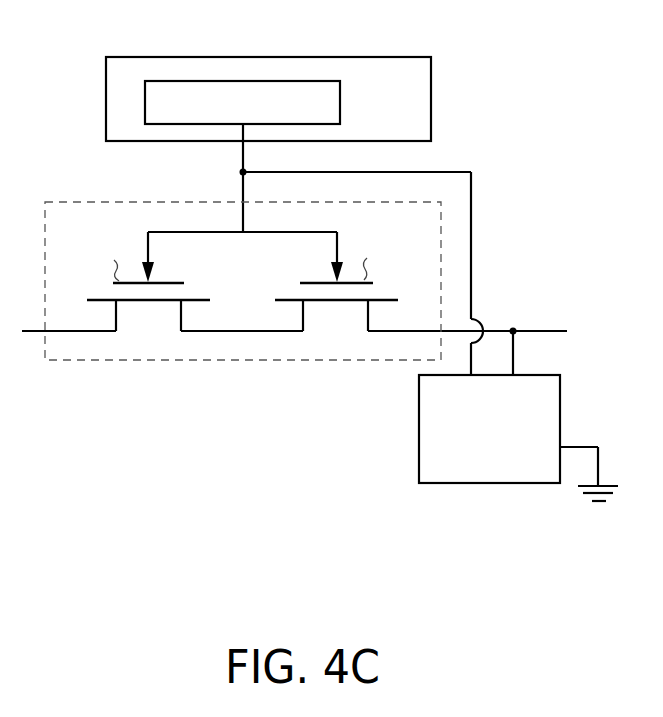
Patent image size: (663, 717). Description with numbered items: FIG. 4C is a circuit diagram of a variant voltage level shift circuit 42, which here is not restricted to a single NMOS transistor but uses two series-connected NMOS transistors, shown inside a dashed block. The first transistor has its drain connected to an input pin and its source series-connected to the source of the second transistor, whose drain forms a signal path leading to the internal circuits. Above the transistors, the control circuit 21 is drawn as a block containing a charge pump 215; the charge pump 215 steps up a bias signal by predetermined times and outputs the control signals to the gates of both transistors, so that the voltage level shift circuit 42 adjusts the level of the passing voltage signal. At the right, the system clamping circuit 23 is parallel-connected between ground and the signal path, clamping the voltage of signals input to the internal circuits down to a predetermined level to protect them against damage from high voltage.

The control circuit 21 is at (433, 104).
The charge pump 215 is at (342, 104).
The voltage level shift circuit 42 is at (243, 317).
The system clamping circuit 23 is at (562, 410).